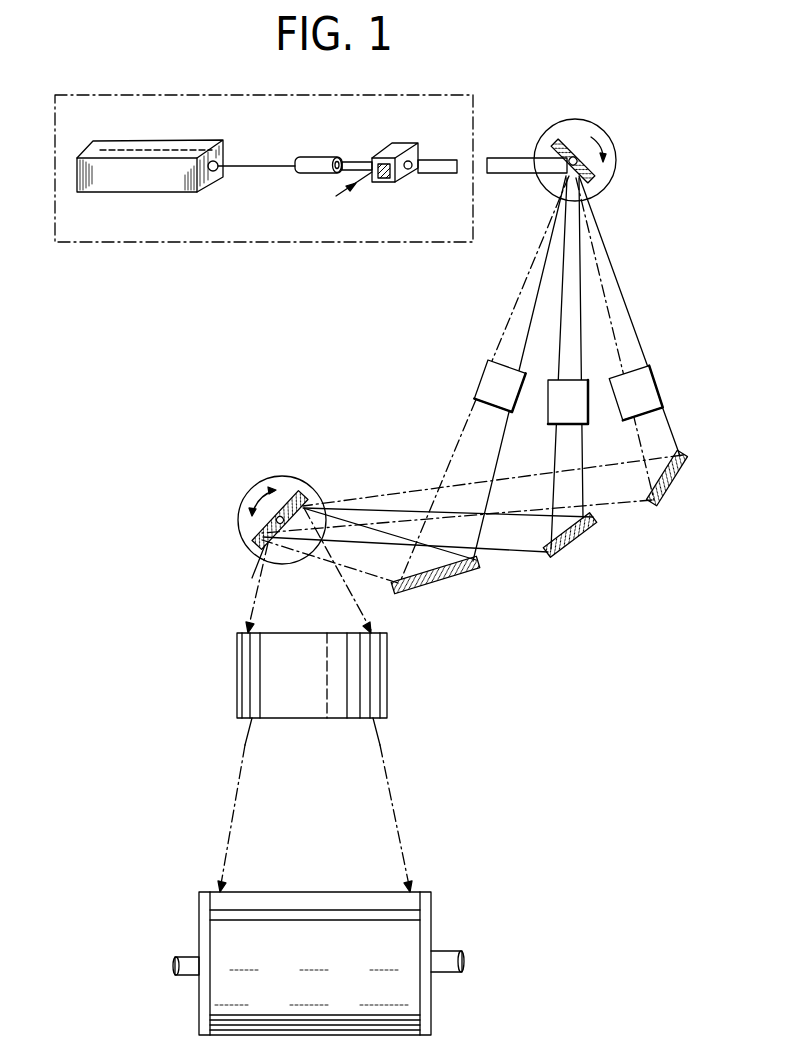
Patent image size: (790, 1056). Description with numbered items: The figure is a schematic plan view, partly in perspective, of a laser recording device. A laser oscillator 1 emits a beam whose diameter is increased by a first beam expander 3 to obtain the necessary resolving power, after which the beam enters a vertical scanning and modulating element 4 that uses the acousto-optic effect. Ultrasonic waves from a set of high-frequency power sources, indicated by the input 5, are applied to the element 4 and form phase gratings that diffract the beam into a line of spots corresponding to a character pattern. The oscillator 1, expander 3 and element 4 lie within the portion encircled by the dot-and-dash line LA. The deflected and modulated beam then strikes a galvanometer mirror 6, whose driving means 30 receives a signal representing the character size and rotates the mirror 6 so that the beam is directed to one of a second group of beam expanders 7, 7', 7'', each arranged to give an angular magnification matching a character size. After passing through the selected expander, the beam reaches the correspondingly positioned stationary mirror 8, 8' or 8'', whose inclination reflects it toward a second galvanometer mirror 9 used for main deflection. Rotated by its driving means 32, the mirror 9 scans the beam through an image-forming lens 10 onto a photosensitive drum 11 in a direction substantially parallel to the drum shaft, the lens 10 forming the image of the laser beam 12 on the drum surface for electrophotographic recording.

The laser oscillator 1 is at (145, 193).
The first beam expander 3 is at (322, 158).
The vertical scanning and modulating element 4 is at (388, 180).
The ultrasonic wave input 5 is at (336, 196).
The galvanometer mirror 6 is at (567, 142).
The beam expander 7 is at (477, 386).
The beam expander 7' is at (556, 423).
The beam expander 7'' is at (661, 389).
The stationary mirror 8 is at (435, 600).
The stationary mirror 8' is at (581, 550).
The stationary mirror 8'' is at (689, 484).
The galvanometer mirror 9 is at (262, 527).
The image-forming lens 10 is at (382, 684).
The photosensitive drum 11 is at (416, 918).
The laser beam 12 is at (446, 160).
The galvanometer mirror driving means 30 is at (607, 140).
The driving means 32 is at (272, 488).
The dot-and-dash line LA is at (170, 242).